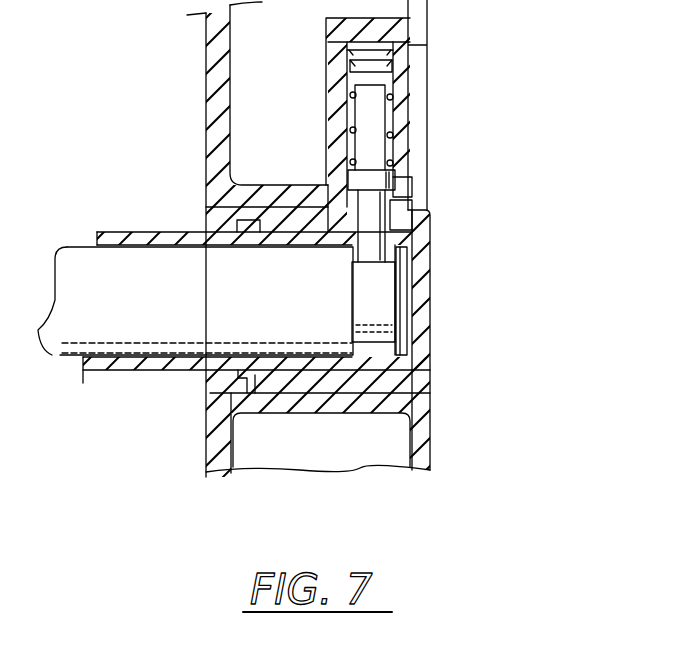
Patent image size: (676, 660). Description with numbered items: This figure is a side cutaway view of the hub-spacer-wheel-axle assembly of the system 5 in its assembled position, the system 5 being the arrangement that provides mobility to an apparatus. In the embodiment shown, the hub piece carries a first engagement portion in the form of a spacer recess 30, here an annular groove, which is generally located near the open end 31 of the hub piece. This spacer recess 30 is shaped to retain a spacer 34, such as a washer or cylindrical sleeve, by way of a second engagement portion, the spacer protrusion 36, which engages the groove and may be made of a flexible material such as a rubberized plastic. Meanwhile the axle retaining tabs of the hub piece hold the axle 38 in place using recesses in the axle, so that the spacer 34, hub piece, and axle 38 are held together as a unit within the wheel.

The system 5 is at (514, 146).
The spacer recess 30 is at (227, 400).
The open end 31 is at (200, 226).
The spacer 34 is at (99, 231).
The spacer protrusion 36 is at (252, 383).
The axle 38 is at (147, 313).